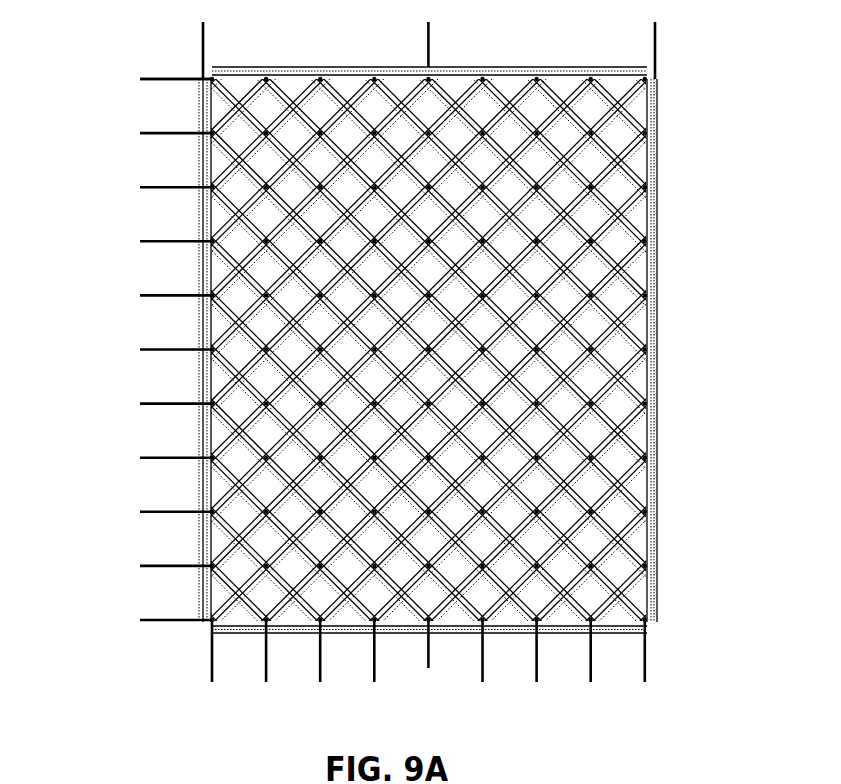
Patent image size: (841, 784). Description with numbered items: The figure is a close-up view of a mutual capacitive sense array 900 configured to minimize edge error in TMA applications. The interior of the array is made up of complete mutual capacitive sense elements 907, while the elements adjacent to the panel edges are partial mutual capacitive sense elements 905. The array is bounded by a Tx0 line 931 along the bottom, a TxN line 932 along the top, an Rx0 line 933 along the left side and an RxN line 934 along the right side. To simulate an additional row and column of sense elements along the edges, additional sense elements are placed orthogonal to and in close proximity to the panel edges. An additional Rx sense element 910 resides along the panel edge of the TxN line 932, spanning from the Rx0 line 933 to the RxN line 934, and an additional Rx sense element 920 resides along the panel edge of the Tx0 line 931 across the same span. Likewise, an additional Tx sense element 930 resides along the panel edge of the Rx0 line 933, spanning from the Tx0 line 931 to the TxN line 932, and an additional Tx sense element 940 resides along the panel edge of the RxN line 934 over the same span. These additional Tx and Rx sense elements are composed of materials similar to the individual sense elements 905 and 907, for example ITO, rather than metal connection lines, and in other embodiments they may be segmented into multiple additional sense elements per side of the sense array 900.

The mutual capacitive sense array 900 is at (160, 722).
The partial mutual capacitive sense element 905 is at (634, 157).
The complete mutual capacitive sense element 907 is at (620, 457).
The additional Rx sense element 910 is at (402, 62).
The additional Rx sense element 920 is at (405, 630).
The additional Tx sense element 930 is at (200, 283).
The additional Tx sense element 940 is at (657, 302).
The Tx0 line 931 is at (150, 618).
The TxN line 932 is at (150, 77).
The Rx0 line 933 is at (212, 656).
The RxN line 934 is at (647, 657).